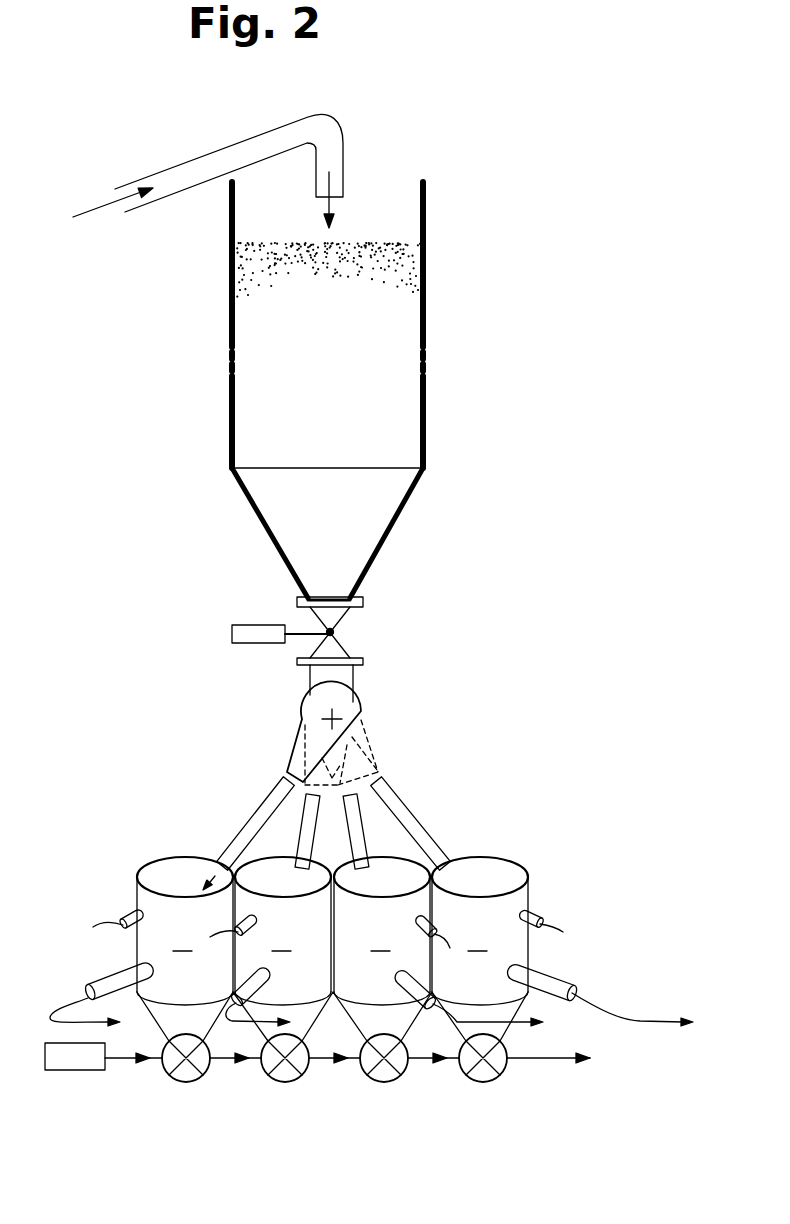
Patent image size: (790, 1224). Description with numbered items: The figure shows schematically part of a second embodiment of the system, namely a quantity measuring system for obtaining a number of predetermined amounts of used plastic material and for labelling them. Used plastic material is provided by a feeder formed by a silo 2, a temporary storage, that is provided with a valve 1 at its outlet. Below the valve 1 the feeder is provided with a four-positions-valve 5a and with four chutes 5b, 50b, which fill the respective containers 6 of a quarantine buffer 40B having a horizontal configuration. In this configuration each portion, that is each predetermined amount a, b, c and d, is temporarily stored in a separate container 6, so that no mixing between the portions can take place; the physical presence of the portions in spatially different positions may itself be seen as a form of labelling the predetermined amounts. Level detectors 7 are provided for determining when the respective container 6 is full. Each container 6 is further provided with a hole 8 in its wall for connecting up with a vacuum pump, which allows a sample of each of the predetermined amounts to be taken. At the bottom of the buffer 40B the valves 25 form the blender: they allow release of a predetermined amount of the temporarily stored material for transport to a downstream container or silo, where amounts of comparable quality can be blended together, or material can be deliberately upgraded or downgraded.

The valve 1 is at (334, 630).
The silo 2 is at (426, 197).
The four-positions-valve 5a is at (352, 716).
The chutes 5b is at (353, 812).
The chutes 50b is at (307, 833).
The containers 6 is at (498, 857).
The level detectors 7 is at (536, 912).
The hole 8 is at (553, 980).
The valves 25 is at (330, 1069).
The quarantine buffer 40B is at (372, 941).